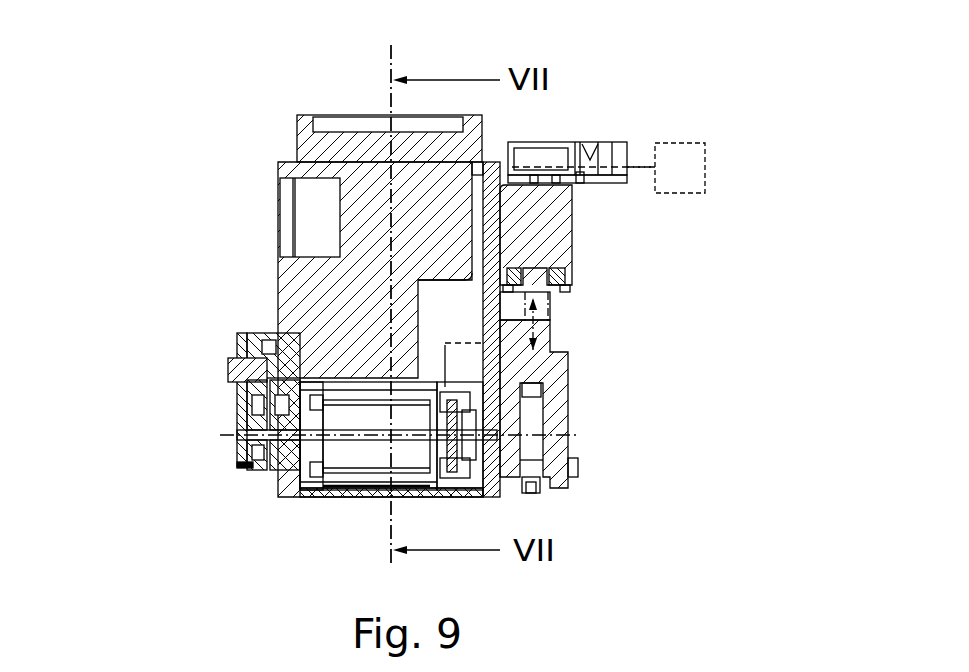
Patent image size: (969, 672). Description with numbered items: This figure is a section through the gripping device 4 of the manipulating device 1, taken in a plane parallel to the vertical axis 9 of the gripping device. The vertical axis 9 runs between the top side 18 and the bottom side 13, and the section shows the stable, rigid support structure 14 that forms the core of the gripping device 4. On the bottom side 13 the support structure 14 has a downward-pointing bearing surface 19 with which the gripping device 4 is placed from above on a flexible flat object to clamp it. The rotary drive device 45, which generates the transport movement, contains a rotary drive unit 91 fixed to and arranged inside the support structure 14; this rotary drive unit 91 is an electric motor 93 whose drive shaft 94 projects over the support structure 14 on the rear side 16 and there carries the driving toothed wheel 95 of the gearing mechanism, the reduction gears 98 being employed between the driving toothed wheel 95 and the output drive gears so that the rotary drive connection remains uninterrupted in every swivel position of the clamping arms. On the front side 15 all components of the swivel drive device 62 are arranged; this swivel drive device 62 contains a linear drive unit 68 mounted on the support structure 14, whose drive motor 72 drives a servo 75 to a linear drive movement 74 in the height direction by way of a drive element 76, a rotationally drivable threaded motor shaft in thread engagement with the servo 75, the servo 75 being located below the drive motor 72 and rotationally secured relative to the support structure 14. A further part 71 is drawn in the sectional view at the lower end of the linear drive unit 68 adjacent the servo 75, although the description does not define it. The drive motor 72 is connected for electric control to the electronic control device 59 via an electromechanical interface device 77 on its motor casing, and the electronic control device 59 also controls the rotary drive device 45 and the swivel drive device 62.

The manipulating device 1 is at (676, 124).
The gripping device 4 is at (321, 322).
The vertical axis 9 is at (393, 63).
The bottom side 13 is at (424, 506).
The support structure 14 is at (308, 295).
The front side 15 is at (608, 378).
The rear side 16 is at (244, 447).
The top side 18 is at (327, 100).
The bearing surface 19 is at (326, 505).
The rotary drive device 45 is at (220, 344).
The electronic control device 59 is at (688, 165).
The swivel drive device 62 is at (585, 272).
The linear drive unit 68 is at (566, 316).
The sensor holder 71 is at (557, 433).
The drive motor 72 is at (568, 221).
The linear drive movement 74 is at (535, 338).
The servo 75 is at (537, 367).
The drive element 76 is at (548, 297).
The electromechanical interface device 77 is at (576, 140).
The rotary drive unit 91 is at (313, 453).
The electric motor 93 is at (413, 453).
The drive shaft 94 is at (253, 445).
The driving toothed wheel 95 is at (245, 418).
The reduction gears 98 is at (247, 390).